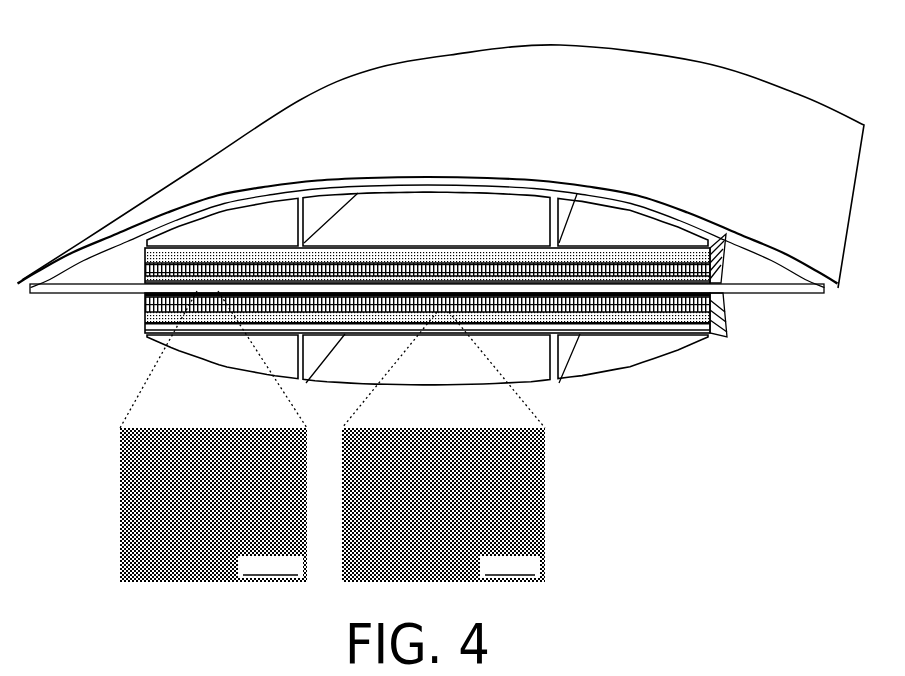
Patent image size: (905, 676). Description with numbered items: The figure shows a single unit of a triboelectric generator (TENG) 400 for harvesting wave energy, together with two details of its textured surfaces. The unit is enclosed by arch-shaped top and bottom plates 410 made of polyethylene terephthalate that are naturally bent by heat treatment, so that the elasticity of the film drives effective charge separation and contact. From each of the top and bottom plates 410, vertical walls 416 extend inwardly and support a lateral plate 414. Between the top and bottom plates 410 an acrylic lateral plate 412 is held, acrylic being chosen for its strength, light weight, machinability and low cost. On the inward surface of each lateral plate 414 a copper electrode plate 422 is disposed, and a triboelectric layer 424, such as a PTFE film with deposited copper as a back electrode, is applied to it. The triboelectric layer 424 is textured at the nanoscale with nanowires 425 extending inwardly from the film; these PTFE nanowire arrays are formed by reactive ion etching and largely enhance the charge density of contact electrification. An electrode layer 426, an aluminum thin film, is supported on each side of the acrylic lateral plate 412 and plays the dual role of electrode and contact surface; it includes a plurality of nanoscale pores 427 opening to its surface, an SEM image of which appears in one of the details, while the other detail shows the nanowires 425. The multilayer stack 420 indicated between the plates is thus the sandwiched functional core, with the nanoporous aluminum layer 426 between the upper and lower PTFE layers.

The triboelectric generator 400 is at (294, 98).
The top and bottom plates 410 is at (529, 52).
The acrylic lateral plate 412 is at (767, 278).
The lateral plate 414 is at (457, 231).
The vertical walls 416 is at (323, 208).
The layered structure 420 is at (225, 240).
The copper electrode plate 422 is at (172, 256).
The triboelectric layer 424 is at (144, 262).
The nanowires 425 is at (463, 428).
The electrode layer 426 is at (142, 283).
The nanoscale pores 427 is at (178, 430).